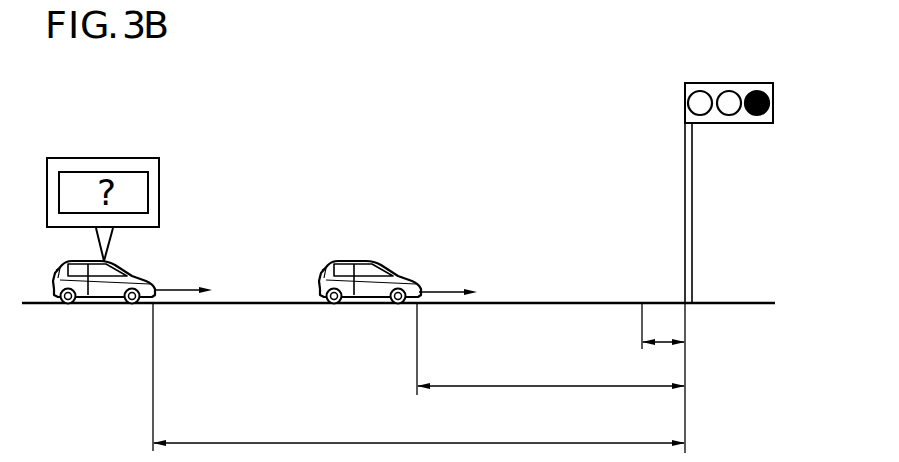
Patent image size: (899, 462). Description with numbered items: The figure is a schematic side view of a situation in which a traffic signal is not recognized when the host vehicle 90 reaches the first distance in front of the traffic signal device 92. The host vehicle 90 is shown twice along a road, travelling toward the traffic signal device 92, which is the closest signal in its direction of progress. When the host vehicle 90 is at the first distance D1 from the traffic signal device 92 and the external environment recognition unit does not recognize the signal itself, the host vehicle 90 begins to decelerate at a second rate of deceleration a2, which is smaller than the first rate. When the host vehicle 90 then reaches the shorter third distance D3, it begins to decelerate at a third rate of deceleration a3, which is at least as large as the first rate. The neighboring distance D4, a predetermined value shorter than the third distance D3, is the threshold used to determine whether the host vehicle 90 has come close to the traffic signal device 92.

The host vehicle 90 is at (65, 265).
The traffic signal device 92 is at (723, 83).
The second rate of deceleration a2 is at (184, 280).
The third rate of deceleration a3 is at (448, 281).
The first distance D1 is at (419, 377).
The third distance D3 is at (551, 349).
The neighboring distance D4 is at (663, 326).